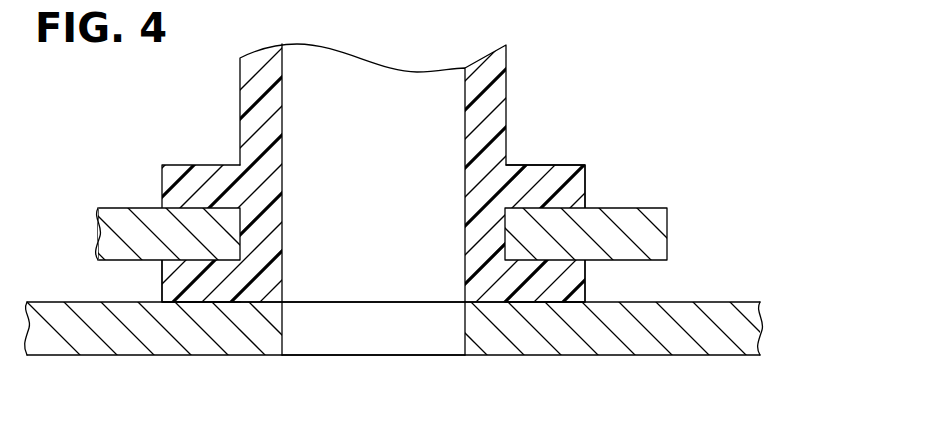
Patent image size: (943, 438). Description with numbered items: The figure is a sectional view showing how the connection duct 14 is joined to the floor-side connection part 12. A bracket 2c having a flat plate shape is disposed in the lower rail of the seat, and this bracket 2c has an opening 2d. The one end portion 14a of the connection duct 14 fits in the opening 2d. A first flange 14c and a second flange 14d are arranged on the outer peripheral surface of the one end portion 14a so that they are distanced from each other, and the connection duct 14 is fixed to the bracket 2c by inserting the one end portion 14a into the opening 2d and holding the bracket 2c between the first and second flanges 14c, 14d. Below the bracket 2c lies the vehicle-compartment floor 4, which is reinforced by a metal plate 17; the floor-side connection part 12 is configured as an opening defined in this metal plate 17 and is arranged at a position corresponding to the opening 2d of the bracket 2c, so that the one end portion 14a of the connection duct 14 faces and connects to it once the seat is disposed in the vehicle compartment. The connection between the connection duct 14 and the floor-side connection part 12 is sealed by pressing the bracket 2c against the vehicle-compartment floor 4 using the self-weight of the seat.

The connection duct 14 is at (422, 230).
The one end portion of the connection duct 14a is at (253, 272).
The first flange 14c is at (542, 282).
The second flange 14d is at (548, 182).
The bracket 2c is at (668, 208).
The opening 2d is at (465, 235).
The vehicle-compartment floor 4 is at (405, 322).
The floor-side connection part 12 is at (287, 297).
The metal plate 17 is at (728, 325).